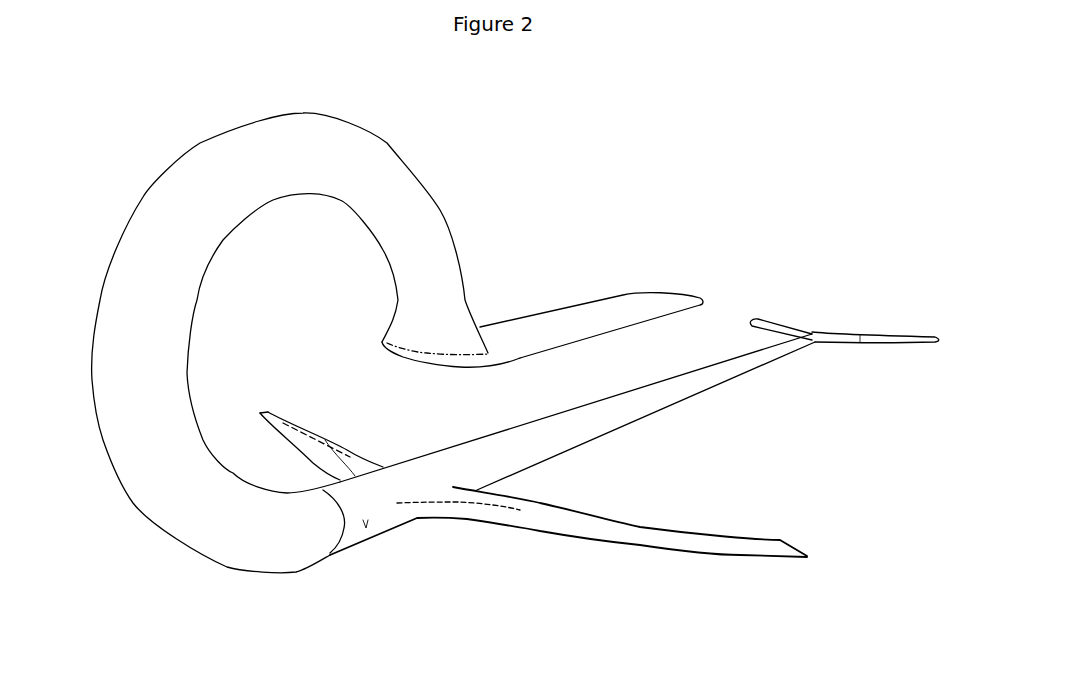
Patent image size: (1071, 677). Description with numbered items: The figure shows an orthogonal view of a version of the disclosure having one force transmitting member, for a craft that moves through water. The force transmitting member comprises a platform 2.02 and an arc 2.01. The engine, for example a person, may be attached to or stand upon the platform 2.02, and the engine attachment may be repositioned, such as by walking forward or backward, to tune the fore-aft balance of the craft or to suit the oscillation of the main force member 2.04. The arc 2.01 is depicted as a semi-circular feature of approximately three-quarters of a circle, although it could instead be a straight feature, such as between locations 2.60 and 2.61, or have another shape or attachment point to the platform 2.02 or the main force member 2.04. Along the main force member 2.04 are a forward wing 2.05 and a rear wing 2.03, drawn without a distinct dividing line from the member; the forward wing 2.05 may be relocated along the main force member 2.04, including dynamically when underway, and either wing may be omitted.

The arc 2.01 is at (182, 178).
The platform 2.02 is at (612, 308).
The rear wing 2.03 is at (858, 335).
The main force member 2.04 is at (660, 398).
The forward wing 2.05 is at (683, 538).
The location 2.60 is at (430, 357).
The location 2.61 is at (340, 518).